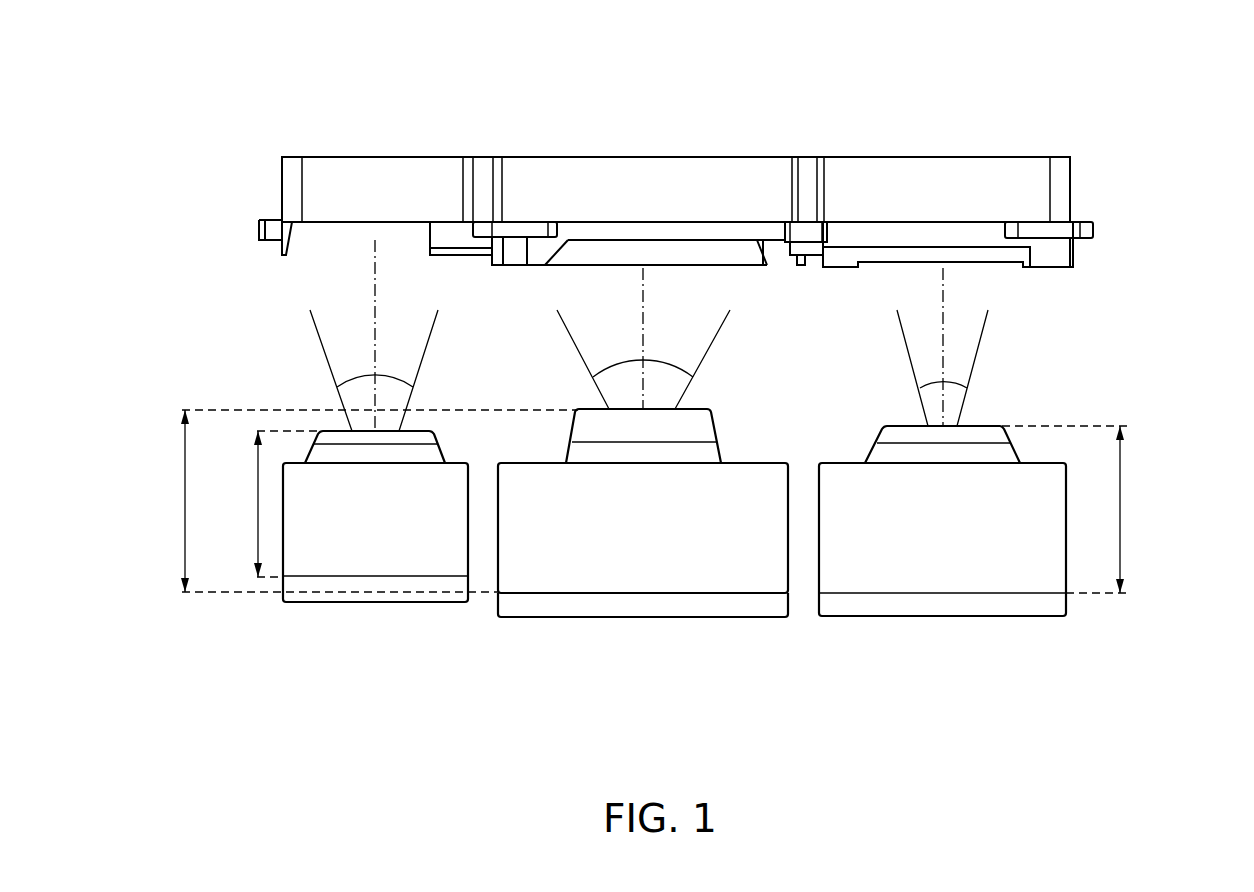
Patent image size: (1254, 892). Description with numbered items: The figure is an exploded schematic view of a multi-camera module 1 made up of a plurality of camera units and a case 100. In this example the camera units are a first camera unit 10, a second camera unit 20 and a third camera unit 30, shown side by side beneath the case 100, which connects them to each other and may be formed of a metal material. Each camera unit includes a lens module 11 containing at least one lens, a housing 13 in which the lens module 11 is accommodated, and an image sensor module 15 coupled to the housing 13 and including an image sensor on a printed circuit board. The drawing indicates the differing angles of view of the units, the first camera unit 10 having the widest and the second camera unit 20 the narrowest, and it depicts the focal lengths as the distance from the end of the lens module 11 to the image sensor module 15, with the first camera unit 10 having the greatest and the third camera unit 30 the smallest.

The multi-camera module 1 is at (350, 63).
The case 100 is at (745, 135).
The first camera unit 10 is at (743, 652).
The lens module 11 is at (707, 425).
The housing 13 is at (595, 580).
The image sensor module 15 is at (683, 608).
The second camera unit 20 is at (1009, 652).
The third camera unit 30 is at (418, 628).